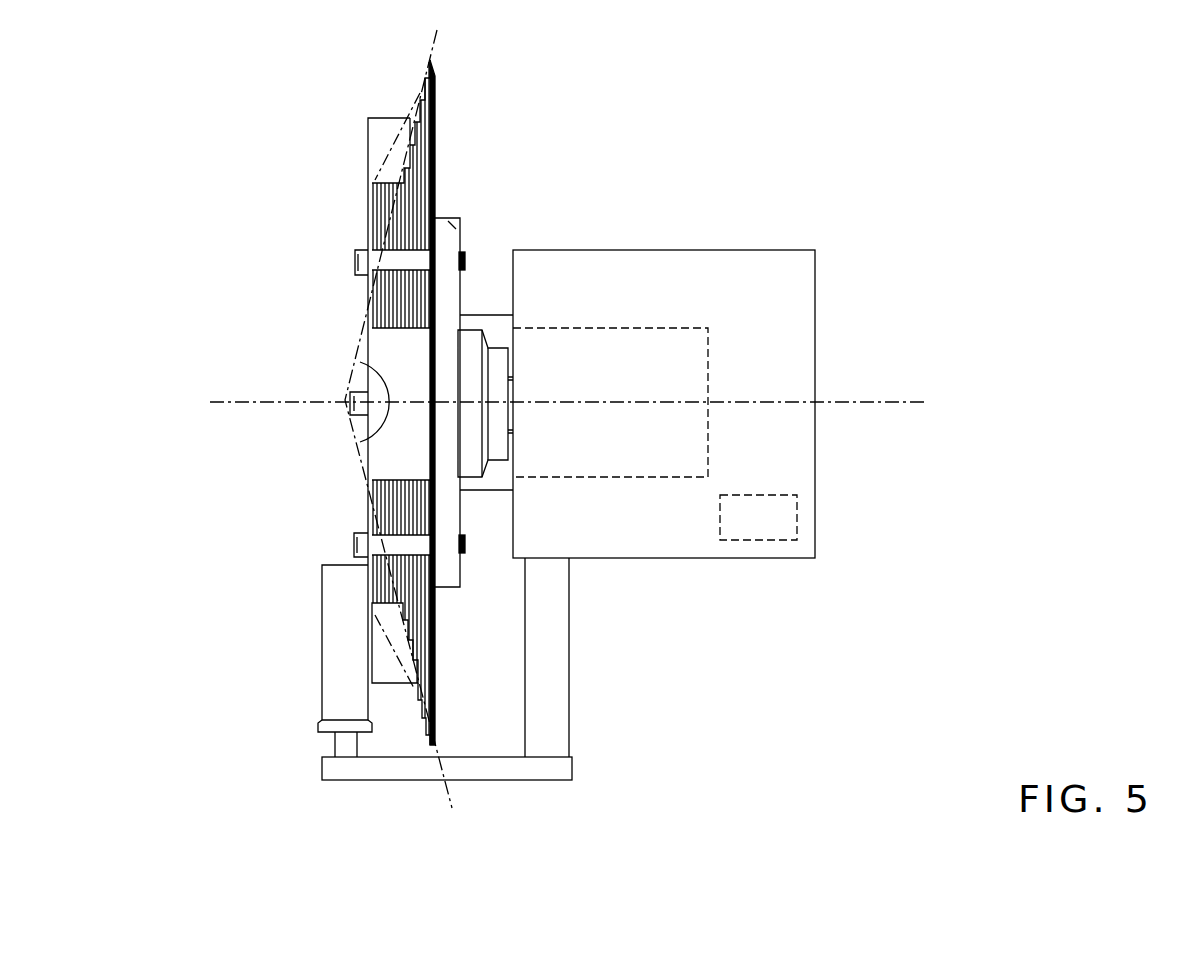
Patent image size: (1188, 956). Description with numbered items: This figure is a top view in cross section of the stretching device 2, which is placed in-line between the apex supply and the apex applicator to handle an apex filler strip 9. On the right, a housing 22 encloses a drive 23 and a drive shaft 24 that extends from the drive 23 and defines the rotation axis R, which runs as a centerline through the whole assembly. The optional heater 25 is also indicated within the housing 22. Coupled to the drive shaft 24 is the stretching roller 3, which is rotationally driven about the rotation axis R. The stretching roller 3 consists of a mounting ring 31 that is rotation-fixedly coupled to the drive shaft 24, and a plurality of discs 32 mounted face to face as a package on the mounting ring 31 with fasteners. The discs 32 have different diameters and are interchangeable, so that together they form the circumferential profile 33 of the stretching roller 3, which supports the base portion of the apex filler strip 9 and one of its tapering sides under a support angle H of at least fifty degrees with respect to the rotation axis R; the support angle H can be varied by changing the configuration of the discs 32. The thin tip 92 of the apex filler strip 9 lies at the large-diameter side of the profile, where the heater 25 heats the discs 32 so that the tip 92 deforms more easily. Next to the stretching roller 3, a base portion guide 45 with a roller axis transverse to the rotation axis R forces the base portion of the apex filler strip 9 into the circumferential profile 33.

The stretching device 2 is at (232, 148).
The stretching roller 3 is at (433, 112).
The apex filler strip 9 is at (367, 137).
The housing 22 is at (792, 250).
The drive 23 is at (645, 352).
The drive shaft 24 is at (497, 362).
The heater 25 is at (765, 518).
The mounting ring 31 is at (461, 268).
The discs 32 is at (433, 170).
The circumferential profile 33 is at (367, 193).
The base portion guide 45 is at (337, 643).
The tip 92 is at (413, 92).
The rotation axis R is at (554, 402).
The support angle H is at (380, 370).